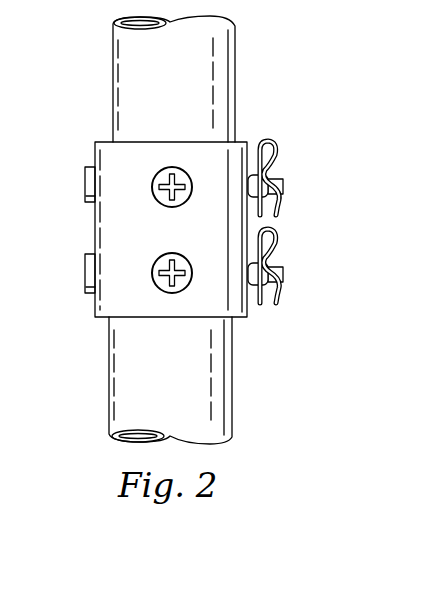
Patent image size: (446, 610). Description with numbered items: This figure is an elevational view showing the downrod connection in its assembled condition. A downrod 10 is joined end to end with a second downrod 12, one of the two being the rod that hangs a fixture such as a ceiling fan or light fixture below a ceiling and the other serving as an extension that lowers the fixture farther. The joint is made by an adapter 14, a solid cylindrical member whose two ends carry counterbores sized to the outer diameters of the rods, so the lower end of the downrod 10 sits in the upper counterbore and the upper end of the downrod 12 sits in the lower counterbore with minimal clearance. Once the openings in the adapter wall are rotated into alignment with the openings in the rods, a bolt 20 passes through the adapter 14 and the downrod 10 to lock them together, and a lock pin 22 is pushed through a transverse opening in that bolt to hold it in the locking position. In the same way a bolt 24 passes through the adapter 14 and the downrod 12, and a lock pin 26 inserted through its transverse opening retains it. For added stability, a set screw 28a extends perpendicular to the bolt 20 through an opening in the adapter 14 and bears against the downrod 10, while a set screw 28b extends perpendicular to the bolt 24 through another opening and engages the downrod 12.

The downrod 10 is at (235, 70).
The downrod 12 is at (232, 393).
The adapter 14 is at (95, 152).
The bolt 20 is at (86, 184).
The lock pin 22 is at (278, 153).
The bolt 24 is at (85, 273).
The lock pin 26 is at (278, 243).
The set screw 28a is at (182, 167).
The set screw 28b is at (180, 293).